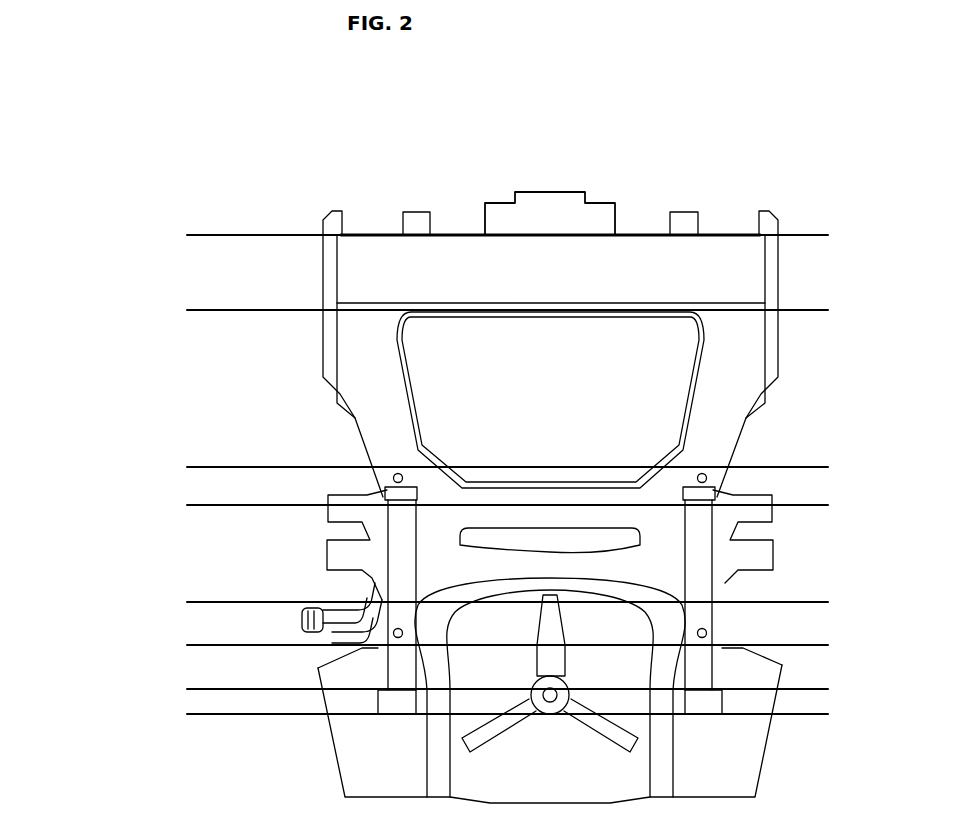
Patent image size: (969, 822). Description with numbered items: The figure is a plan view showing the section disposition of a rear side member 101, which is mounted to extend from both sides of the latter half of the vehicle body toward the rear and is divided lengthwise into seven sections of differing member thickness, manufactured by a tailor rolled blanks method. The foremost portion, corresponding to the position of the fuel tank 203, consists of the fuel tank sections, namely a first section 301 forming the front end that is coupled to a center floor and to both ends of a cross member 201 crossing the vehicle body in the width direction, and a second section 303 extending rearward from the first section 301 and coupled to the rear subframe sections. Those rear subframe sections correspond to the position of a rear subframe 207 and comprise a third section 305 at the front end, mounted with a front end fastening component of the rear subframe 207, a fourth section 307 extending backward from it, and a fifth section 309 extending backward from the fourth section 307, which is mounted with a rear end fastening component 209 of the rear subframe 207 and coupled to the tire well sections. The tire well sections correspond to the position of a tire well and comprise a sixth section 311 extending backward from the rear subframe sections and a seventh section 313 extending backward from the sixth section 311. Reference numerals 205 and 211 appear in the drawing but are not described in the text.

The rear side member 101 is at (724, 338).
The cross member 201 is at (633, 263).
The fuel tank 203 is at (640, 382).
The fastening screws 205 is at (403, 473).
The rear subframe 207 is at (645, 540).
The rear end fastening component 209 is at (401, 636).
The base housing with fan 211 is at (625, 703).
The first section 301 is at (247, 253).
The second section 303 is at (247, 365).
The third section 305 is at (247, 472).
The fourth section 307 is at (247, 534).
The fifth section 309 is at (247, 609).
The sixth section 311 is at (247, 654).
The seventh section 313 is at (247, 689).